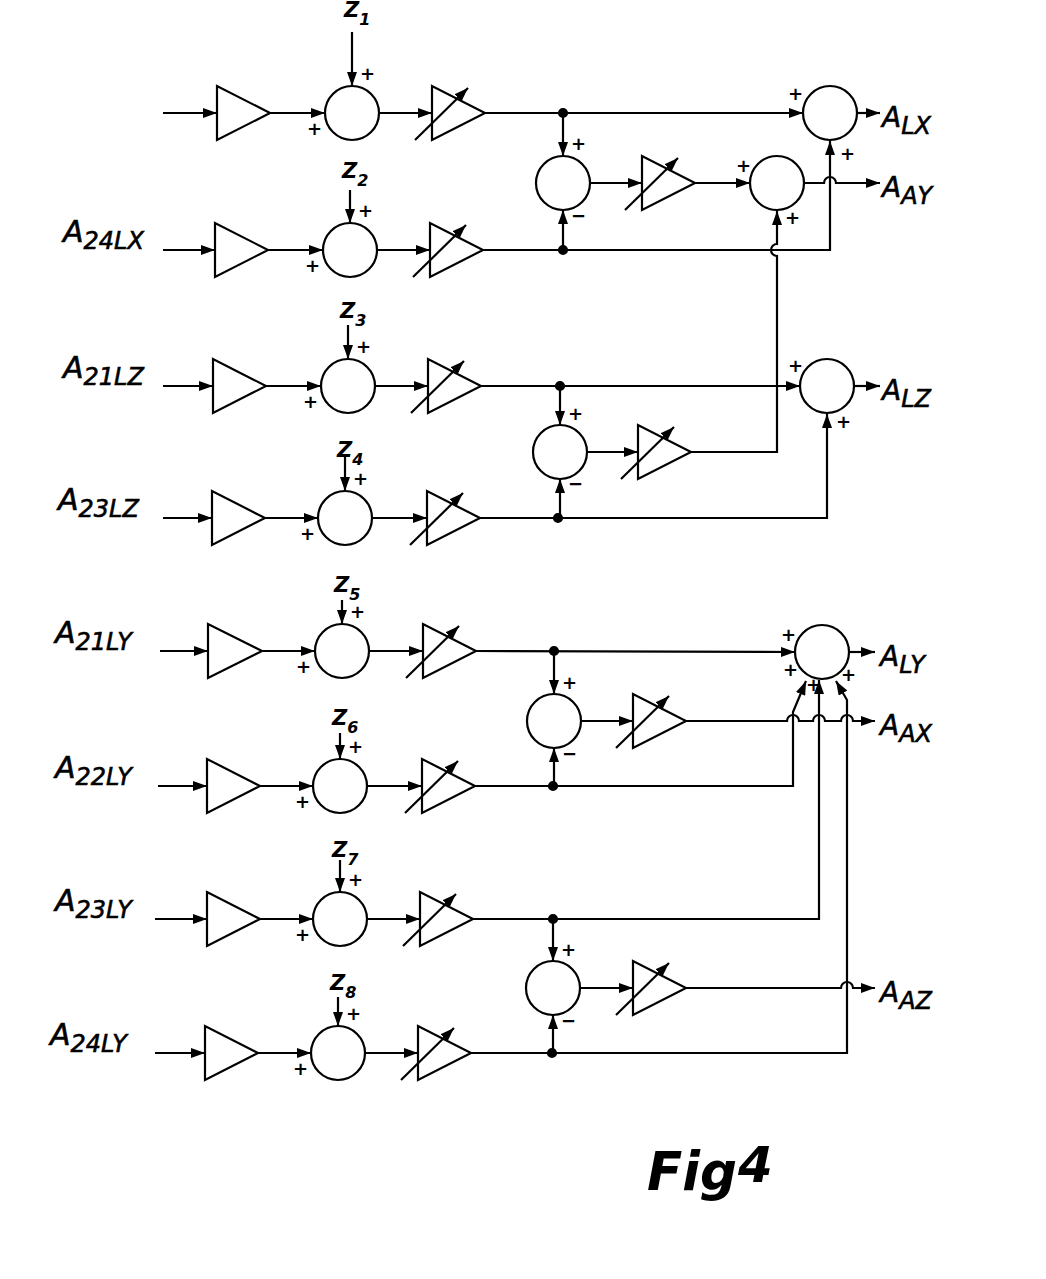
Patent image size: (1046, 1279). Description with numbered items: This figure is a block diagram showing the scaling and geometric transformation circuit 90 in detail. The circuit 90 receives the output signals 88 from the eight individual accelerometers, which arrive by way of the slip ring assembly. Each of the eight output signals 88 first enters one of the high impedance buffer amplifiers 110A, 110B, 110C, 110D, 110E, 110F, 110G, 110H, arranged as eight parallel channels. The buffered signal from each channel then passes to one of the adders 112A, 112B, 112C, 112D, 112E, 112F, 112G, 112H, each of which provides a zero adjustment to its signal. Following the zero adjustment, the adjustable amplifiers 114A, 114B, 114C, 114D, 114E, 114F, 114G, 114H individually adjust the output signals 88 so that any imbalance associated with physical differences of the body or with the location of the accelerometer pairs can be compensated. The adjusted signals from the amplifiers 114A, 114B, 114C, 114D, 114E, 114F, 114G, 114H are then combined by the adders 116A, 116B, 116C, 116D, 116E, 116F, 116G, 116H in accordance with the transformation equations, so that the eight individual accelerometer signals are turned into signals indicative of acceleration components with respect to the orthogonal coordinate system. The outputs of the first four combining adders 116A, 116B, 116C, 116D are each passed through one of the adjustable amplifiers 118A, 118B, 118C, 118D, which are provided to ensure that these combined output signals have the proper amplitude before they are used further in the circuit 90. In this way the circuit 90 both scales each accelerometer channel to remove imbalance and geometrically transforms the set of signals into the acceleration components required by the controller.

The output signals 88 is at (139, 90).
The scaling and geometric transformation circuit 90 is at (238, 95).
The high impedance buffer amplifier 110A is at (237, 132).
The high impedance buffer amplifier 110B is at (224, 228).
The high impedance buffer amplifier 110C is at (218, 361).
The high impedance buffer amplifier 110D is at (226, 534).
The high impedance buffer amplifier 110E is at (218, 665).
The high impedance buffer amplifier 110F is at (221, 800).
The high impedance buffer amplifier 110G is at (217, 935).
The high impedance buffer amplifier 110H is at (217, 1069).
The adder 112A is at (372, 94).
The adder 112B is at (362, 242).
The adder 112C is at (366, 365).
The adder 112D is at (363, 500).
The adder 112E is at (342, 679).
The adder 112F is at (357, 775).
The adder 112G is at (360, 895).
The adder 112H is at (338, 1081).
The adjustable amplifier 114A is at (458, 128).
The adjustable amplifier 114B is at (456, 265).
The adjustable amplifier 114C is at (447, 400).
The adjustable amplifier 114D is at (450, 533).
The adjustable amplifier 114E is at (441, 666).
The adjustable amplifier 114F is at (450, 800).
The adjustable amplifier 114G is at (445, 936).
The adjustable amplifier 114H is at (453, 1068).
The adder 116A is at (537, 183).
The adder 116B is at (533, 455).
The adder 116C is at (527, 724).
The adder 116D is at (526, 990).
The adder 116E is at (762, 160).
The adder 116F is at (840, 92).
The adder 116G is at (840, 365).
The adder 116H is at (806, 628).
The adjustable amplifier 118A is at (660, 160).
The adjustable amplifier 118B is at (647, 428).
The adjustable amplifier 118C is at (645, 697).
The adjustable amplifier 118D is at (645, 965).